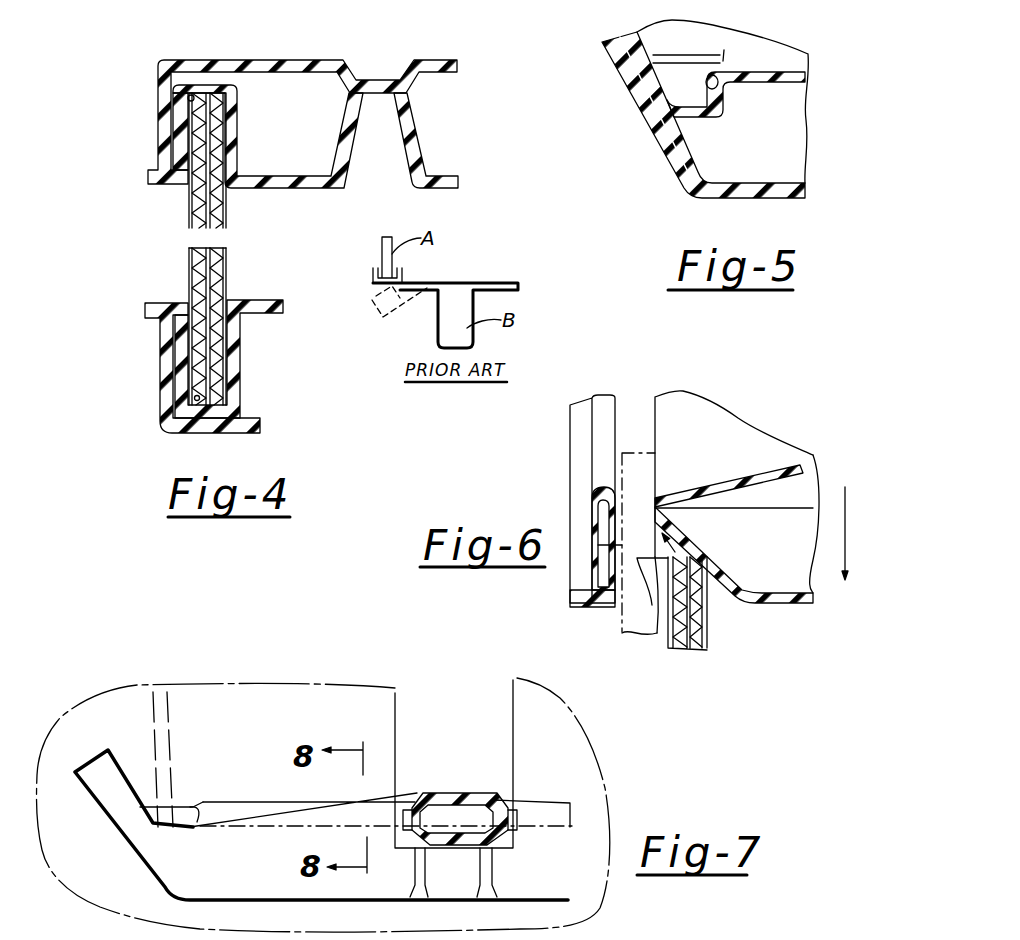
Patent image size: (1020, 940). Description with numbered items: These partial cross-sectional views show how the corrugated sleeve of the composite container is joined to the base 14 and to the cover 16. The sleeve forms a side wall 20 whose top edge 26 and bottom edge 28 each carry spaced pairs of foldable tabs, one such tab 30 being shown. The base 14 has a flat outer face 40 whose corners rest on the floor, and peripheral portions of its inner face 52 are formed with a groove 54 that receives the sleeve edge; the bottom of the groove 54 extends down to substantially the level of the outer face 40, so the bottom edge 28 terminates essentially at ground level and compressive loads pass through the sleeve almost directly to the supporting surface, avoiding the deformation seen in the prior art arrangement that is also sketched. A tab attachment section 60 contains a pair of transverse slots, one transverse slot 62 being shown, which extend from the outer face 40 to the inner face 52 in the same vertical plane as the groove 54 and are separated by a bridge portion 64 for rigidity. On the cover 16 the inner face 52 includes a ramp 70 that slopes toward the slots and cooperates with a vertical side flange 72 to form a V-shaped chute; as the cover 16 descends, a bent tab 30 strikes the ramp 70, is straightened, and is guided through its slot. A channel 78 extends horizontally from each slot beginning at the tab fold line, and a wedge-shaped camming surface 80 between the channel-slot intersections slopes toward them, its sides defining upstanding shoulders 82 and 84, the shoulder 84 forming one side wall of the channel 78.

In FIG. 4, the base 14 is at (272, 298).
In FIG. 4, the cover 16 is at (338, 56).
In FIG. 4, the side wall 20 is at (240, 240).
In FIG. 4, the top edge 26 is at (204, 95).
In FIG. 6, the top edge 26 is at (680, 550).
In FIG. 4, the bottom edge 28 is at (217, 420).
In FIG. 6, the tab 30 is at (700, 632).
In FIG. 4, the outer face 40 is at (278, 61).
In FIG. 4, the inner face 52 is at (318, 189).
In FIG. 6, the inner face 52 is at (787, 603).
In FIG. 4, the groove 54 is at (191, 94).
In FIG. 5, the tab attachment section 60 is at (660, 162).
In FIG. 6, the tab attachment section 60 is at (788, 425).
In FIG. 7, the tab attachment section 60 is at (163, 672).
In FIG. 6, the transverse slot 62 is at (628, 413).
In FIG. 7, the bridge portion 64 is at (447, 793).
In FIG. 6, the ramp 70 is at (673, 550).
In FIG. 6, the vertical side flange 72 is at (623, 545).
In FIG. 5, the channel 78 is at (687, 103).
In FIG. 7, the channel 78 is at (182, 815).
In FIG. 6, the camming surface 80 is at (727, 478).
In FIG. 7, the camming surface 80 is at (283, 807).
In FIG. 7, the shoulder 82 is at (375, 810).
In FIG. 5, the shoulder 84 is at (712, 80).
In FIG. 7, the shoulder 84 is at (195, 807).